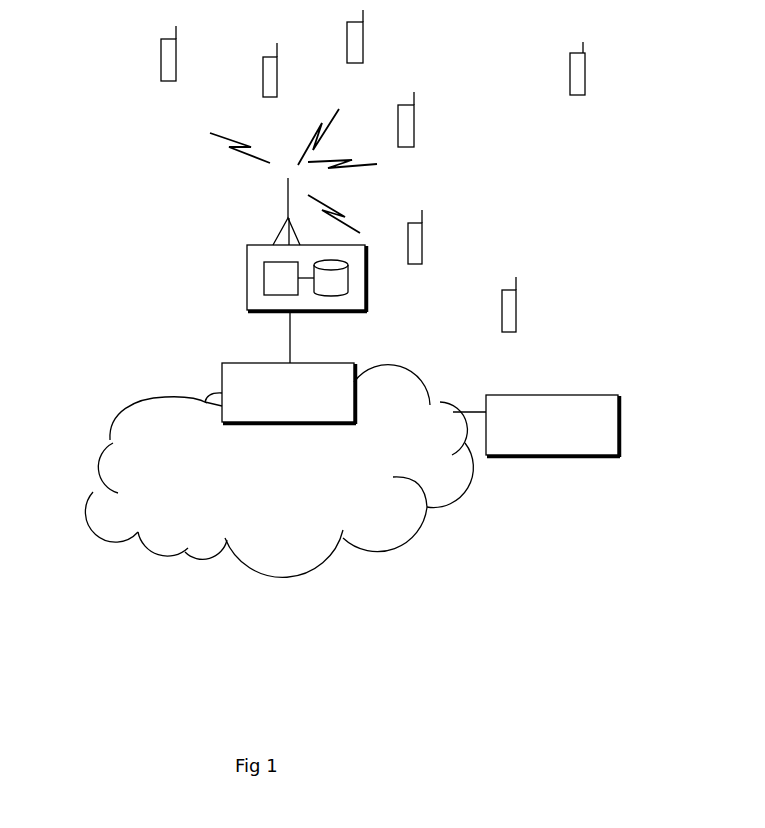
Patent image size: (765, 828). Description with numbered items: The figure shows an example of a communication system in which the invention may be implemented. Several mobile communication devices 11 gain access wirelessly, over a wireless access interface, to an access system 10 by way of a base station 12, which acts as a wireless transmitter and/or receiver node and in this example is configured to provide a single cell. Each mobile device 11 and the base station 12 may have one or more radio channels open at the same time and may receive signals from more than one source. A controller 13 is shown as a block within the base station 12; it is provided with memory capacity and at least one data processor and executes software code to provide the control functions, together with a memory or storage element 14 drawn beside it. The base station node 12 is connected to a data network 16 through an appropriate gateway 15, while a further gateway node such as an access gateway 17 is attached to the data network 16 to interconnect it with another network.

The access system 10 is at (138, 193).
The mobile communication device 11 is at (417, 242).
The base station 12 is at (245, 262).
The controller 13 is at (260, 278).
The database 14 is at (337, 292).
The gateway 15 is at (222, 380).
The data network 16 is at (137, 428).
The access gateway 17 is at (573, 410).